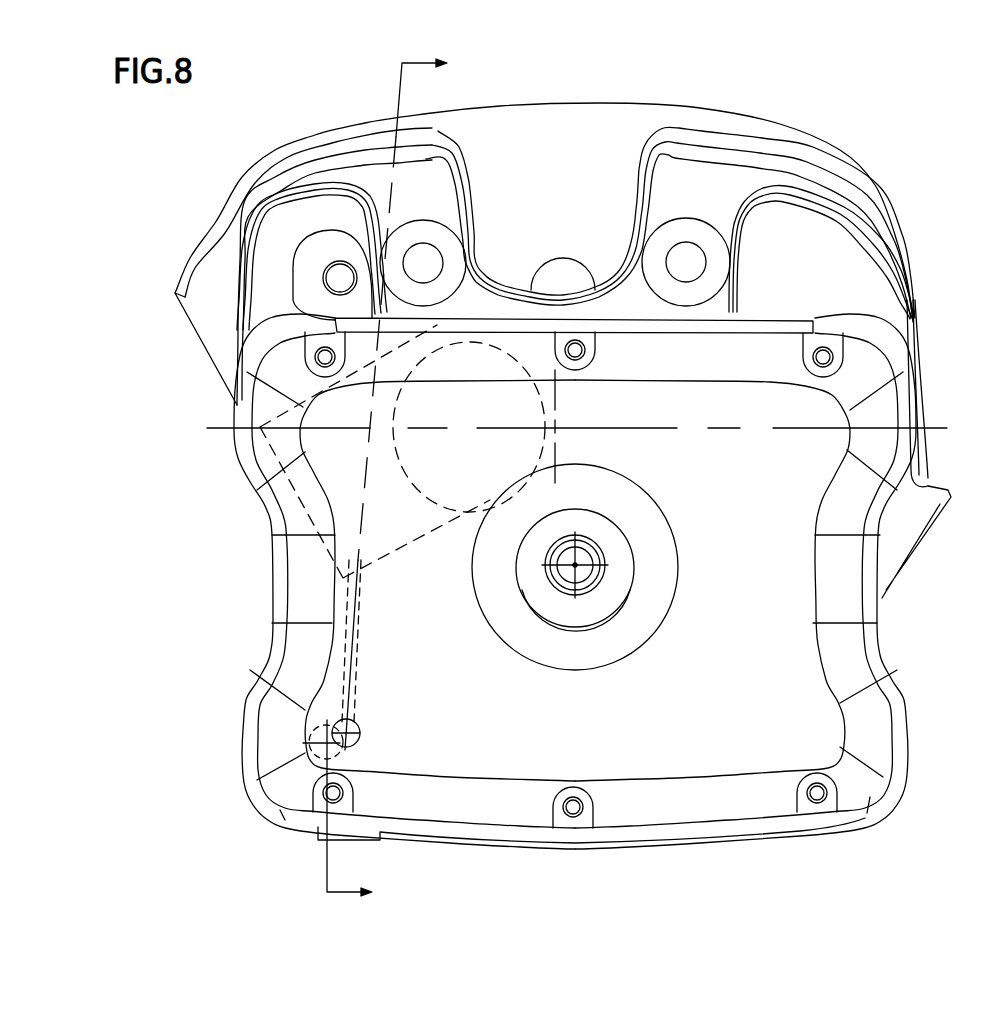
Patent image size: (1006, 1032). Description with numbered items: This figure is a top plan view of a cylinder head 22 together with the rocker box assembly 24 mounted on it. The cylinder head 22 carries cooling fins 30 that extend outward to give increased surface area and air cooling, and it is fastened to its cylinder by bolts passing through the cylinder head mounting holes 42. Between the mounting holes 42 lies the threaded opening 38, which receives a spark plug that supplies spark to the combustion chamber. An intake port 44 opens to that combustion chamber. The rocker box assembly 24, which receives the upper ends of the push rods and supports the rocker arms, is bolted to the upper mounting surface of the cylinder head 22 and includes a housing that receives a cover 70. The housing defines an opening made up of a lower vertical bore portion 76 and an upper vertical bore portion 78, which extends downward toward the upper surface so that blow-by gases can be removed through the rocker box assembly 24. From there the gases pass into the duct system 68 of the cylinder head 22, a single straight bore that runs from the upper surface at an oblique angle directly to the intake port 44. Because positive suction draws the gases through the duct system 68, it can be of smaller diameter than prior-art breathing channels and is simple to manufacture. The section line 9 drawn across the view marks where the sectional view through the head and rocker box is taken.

The section line 9- 9 is at (387, 474).
The cylinder head 22 is at (890, 131).
The rocker box assembly 24 is at (912, 598).
The cooling fins 30 is at (208, 223).
The threaded opening 38 is at (565, 277).
The cylinder head mounting holes 42 is at (687, 283).
The intake port 44 is at (290, 488).
The duct system 68 is at (348, 645).
The cover 70 is at (708, 745).
The lower vertical bore portion 76 is at (354, 727).
The upper vertical bore portion 78 is at (342, 750).